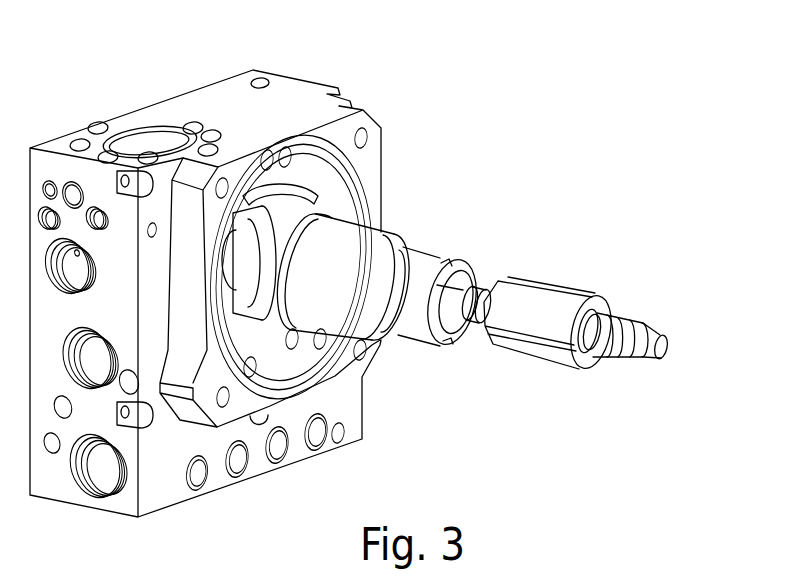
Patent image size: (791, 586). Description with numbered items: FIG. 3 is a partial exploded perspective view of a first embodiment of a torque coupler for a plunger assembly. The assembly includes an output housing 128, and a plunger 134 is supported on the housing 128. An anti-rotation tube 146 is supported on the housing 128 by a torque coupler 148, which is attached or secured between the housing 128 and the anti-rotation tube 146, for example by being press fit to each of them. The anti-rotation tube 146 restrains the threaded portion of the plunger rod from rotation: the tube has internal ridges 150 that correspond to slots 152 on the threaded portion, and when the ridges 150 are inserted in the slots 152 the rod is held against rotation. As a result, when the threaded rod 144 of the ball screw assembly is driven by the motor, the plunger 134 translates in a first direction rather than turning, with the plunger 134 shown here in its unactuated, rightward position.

The output housing 128 is at (289, 87).
The plunger 134 is at (506, 260).
The threaded rod 144 is at (620, 317).
The anti-rotation tube 146 is at (420, 263).
The torque coupler 148 is at (392, 216).
The internal ridges 150 is at (460, 263).
The slots 152 is at (530, 348).